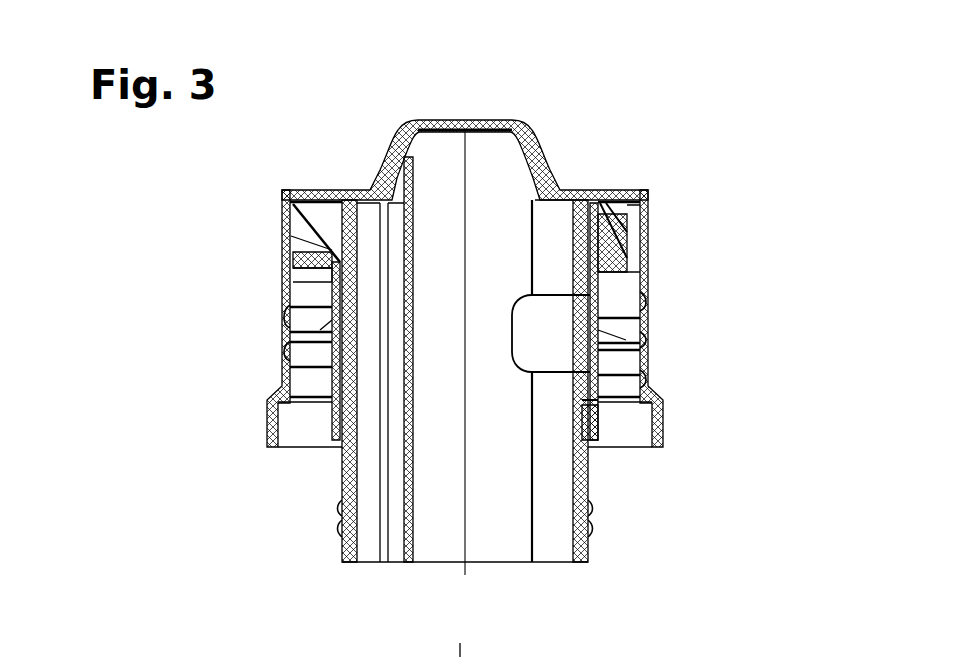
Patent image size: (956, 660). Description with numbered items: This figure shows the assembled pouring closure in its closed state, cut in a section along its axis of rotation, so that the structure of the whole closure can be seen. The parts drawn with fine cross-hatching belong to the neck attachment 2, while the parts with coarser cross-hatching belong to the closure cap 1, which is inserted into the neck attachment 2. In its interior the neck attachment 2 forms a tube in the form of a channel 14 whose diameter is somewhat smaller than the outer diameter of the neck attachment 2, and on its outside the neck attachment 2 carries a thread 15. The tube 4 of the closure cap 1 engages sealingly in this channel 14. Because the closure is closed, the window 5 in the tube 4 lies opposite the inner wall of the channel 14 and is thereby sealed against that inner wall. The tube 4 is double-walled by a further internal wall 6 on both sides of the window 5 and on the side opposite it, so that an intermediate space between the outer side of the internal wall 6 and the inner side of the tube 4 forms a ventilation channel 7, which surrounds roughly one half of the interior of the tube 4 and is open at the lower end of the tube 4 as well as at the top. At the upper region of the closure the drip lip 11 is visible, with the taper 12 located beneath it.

The closure cap 1 is at (556, 160).
The neck attachment 2 is at (650, 310).
The tube on the closure cap 4 is at (587, 538).
The window in the tube 5 is at (557, 323).
The internal wall in the tube 6 is at (413, 450).
The ventilation channel 7 is at (398, 505).
The drip lip 11 is at (282, 212).
The taper under the drip lip 12 is at (282, 241).
The channel in neck attachment 14 is at (582, 416).
The thread on cap of the neck attachment 15 is at (650, 358).